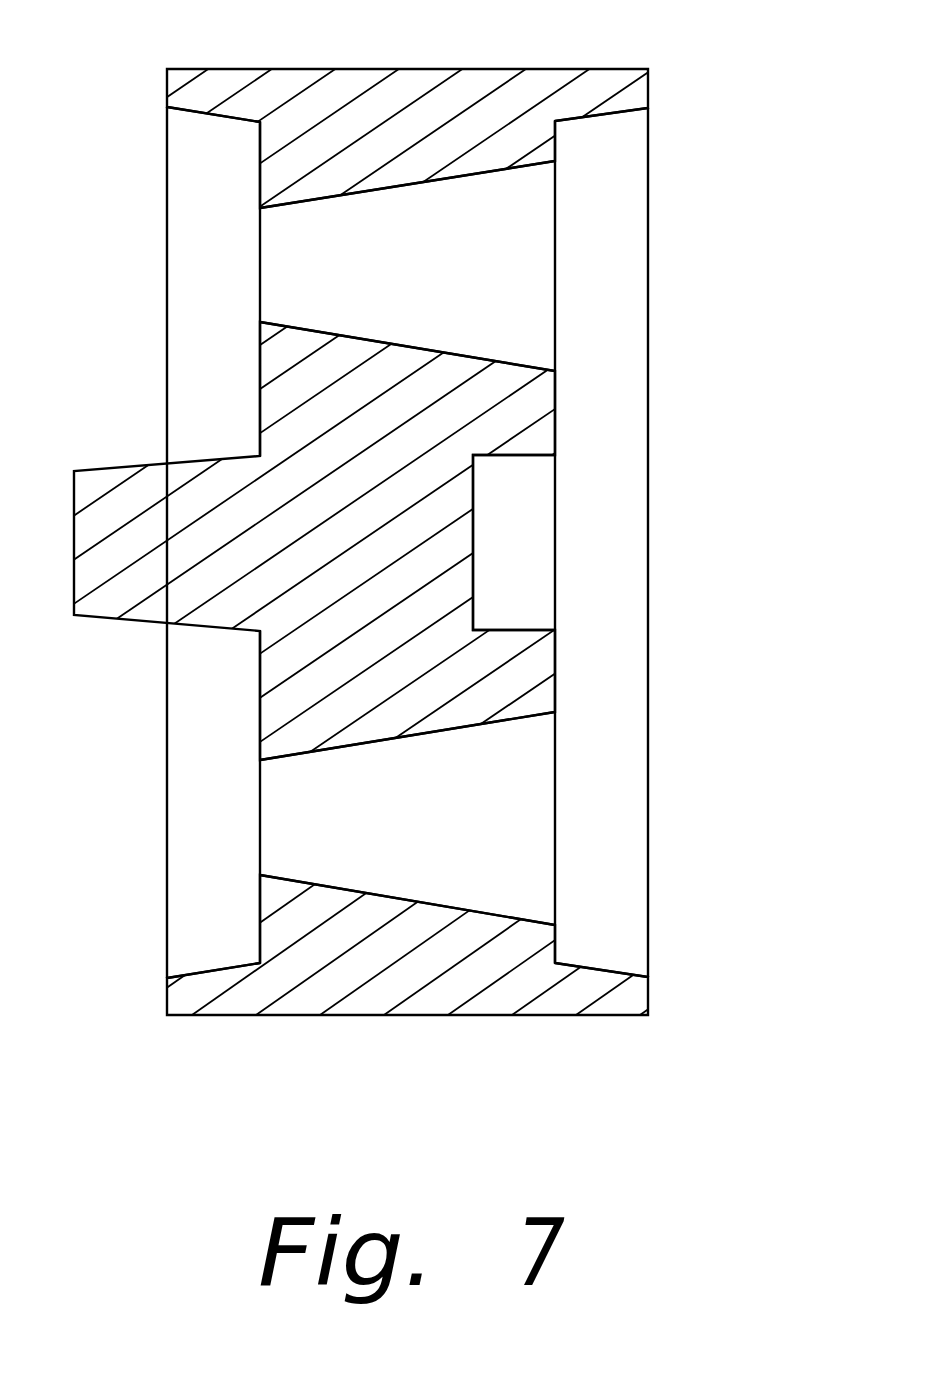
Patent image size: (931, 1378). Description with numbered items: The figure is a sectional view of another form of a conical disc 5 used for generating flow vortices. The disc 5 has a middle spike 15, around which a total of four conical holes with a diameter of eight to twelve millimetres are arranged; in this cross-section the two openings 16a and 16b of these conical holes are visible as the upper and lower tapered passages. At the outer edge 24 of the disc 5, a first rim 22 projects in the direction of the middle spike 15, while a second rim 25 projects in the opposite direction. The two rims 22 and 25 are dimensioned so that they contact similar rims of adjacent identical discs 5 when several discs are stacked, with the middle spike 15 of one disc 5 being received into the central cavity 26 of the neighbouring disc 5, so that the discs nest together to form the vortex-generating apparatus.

The conical disc 5 is at (232, 997).
The middle spike 15 is at (103, 602).
The opening of conical hole 16a is at (510, 305).
The opening of conical hole 16b is at (530, 812).
The first rim 22 is at (180, 213).
The outer edge 24 is at (428, 82).
The second rim 25 is at (638, 400).
The central cavity 26 is at (507, 535).